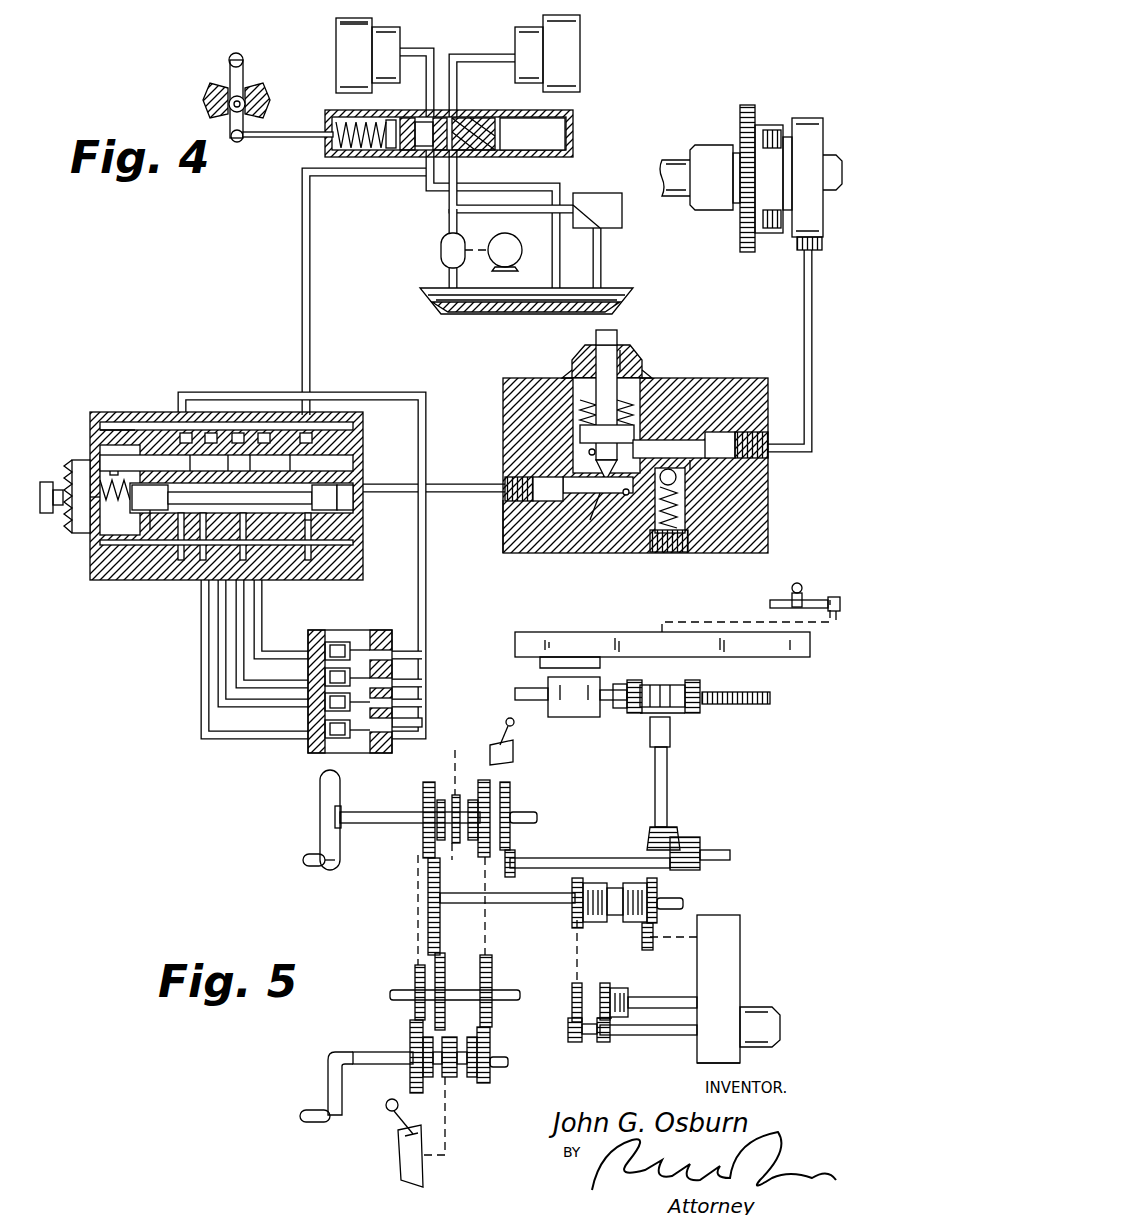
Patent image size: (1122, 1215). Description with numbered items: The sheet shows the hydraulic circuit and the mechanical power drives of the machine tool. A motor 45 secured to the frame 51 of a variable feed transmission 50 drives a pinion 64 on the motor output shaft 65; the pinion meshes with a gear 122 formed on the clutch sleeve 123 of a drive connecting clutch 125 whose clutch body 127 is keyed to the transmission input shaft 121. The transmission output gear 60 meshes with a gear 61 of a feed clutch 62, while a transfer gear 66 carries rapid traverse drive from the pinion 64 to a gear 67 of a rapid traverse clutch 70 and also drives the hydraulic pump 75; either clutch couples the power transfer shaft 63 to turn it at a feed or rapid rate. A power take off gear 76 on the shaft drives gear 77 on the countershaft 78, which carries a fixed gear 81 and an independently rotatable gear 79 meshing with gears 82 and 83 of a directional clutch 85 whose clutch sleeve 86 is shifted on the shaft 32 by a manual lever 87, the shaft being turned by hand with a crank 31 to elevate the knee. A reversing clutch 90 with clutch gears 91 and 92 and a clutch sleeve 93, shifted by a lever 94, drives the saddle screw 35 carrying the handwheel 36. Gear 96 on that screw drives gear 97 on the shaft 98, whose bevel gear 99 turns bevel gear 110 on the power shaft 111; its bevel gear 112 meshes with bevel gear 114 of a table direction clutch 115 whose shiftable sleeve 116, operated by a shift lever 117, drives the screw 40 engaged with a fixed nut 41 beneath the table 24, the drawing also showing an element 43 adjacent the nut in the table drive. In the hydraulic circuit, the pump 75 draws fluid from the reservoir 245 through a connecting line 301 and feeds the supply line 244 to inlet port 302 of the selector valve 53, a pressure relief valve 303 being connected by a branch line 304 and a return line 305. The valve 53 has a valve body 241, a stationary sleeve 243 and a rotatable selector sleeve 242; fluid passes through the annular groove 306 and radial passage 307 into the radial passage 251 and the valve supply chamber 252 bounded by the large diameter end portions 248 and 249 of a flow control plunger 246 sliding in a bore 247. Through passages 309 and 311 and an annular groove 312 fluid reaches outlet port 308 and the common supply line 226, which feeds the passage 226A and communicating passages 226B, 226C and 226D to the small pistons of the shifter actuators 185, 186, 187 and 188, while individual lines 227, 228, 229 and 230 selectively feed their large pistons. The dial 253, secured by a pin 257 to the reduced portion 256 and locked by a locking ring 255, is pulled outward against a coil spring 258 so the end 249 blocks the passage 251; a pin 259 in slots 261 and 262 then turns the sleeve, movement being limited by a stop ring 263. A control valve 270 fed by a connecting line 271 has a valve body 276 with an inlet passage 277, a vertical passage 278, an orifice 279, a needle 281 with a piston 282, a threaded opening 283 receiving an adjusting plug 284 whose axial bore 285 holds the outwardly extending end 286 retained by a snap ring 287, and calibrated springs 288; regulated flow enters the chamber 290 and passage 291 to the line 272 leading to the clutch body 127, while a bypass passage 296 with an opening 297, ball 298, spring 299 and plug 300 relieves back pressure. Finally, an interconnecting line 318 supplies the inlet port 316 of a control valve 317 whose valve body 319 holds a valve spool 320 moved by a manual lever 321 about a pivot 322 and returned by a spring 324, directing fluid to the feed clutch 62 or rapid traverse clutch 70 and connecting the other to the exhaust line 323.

In FIG. 5, the table 24 is at (596, 632).
In FIG. 5, the crank 31 is at (330, 1084).
In FIG. 5, the shaft 32 is at (380, 1052).
In FIG. 5, the screw 35 is at (538, 816).
In FIG. 5, the handwheel 36 is at (318, 795).
In FIG. 5, the screw 40 is at (770, 698).
In FIG. 5, the fixed nut 41 is at (553, 710).
In FIG. 5, the hub 43 is at (620, 712).
In FIG. 4, the motor 45 is at (512, 246).
In FIG. 5, the motor 45 is at (758, 1012).
In FIG. 5, the variable feed transmission 50 is at (754, 969).
In FIG. 5, the frame 51 is at (735, 916).
In FIG. 4, the selector control valve 53 is at (132, 366).
In FIG. 5, the output gear 60 is at (660, 997).
In FIG. 5, the gear 61 is at (660, 886).
In FIG. 4, the feed clutch 62 is at (592, 50).
In FIG. 5, the feed clutch 62 is at (640, 920).
In FIG. 5, the power transfer shaft 63 is at (524, 903).
In FIG. 5, the motor pinion 64 is at (600, 1046).
In FIG. 5, the motor output shaft 65 is at (632, 1034).
In FIG. 5, the transfer gear 66 is at (572, 991).
In FIG. 5, the rapid traverse gear 67 is at (572, 918).
In FIG. 4, the rapid traverse clutch 70 is at (320, 34).
In FIG. 5, the rapid traverse clutch 70 is at (598, 934).
In FIG. 4, the hydraulic pump 75 is at (440, 247).
In FIG. 5, the power take off gear 76 is at (428, 886).
In FIG. 5, the gear 77 is at (445, 960).
In FIG. 5, the countershaft 78 is at (392, 996).
In FIG. 5, the gear 79 is at (415, 969).
In FIG. 5, the gear 81 is at (490, 976).
In FIG. 5, the gear 82 is at (410, 1077).
In FIG. 5, the gear 83 is at (490, 1052).
In FIG. 5, the directional clutch 85 is at (483, 1088).
In FIG. 5, the clutch sleeve 86 is at (453, 1082).
In FIG. 5, the manual lever 87 is at (388, 1112).
In FIG. 5, the directional reversing control clutch 90 is at (413, 841).
In FIG. 5, the clutch gear 91 is at (423, 790).
In FIG. 5, the clutch gear 92 is at (490, 786).
In FIG. 5, the clutch sleeve 93 is at (455, 844).
In FIG. 5, the lever 94 is at (492, 736).
In FIG. 5, the gear 96 is at (512, 797).
In FIG. 5, the gear 97 is at (516, 855).
In FIG. 5, the shaft 98 is at (566, 858).
In FIG. 5, the bevel gear 99 is at (690, 842).
In FIG. 5, the bevel gear 110 is at (664, 830).
In FIG. 5, the power shaft 111 is at (668, 776).
In FIG. 5, the bevel gear 112 is at (668, 735).
In FIG. 5, the bevel gear 114 is at (690, 708).
In FIG. 5, the table direction clutch 115 is at (695, 681).
In FIG. 5, the shiftable sleeve 116 is at (662, 678).
In FIG. 5, the shift lever 117 is at (797, 582).
In FIG. 5, the input shaft 121 is at (655, 998).
In FIG. 4, the gear 122 is at (741, 231).
In FIG. 5, the gear 122 is at (603, 983).
In FIG. 4, the clutch sleeve 123 is at (770, 242).
In FIG. 4, the drive connecting clutch 125 is at (764, 100).
In FIG. 5, the drive connecting clutch 125 is at (630, 989).
In FIG. 4, the clutch body 127 is at (806, 118).
In FIG. 4, the shifter actuator 185 is at (294, 721).
In FIG. 4, the shifter actuator 186 is at (294, 700).
In FIG. 4, the shifter actuator 187 is at (294, 672).
In FIG. 4, the shifter actuator 188 is at (365, 626).
In FIG. 4, the common supply line 226 is at (352, 392).
In FIG. 4, the passage 226A is at (386, 650).
In FIG. 4, the communicating passage 226B is at (400, 676).
In FIG. 4, the communicating passage 226C is at (400, 704).
In FIG. 4, the communicating passage 226D is at (400, 726).
In FIG. 4, the line 227 is at (204, 738).
In FIG. 4, the line 228 is at (216, 702).
In FIG. 4, the line 229 is at (244, 620).
In FIG. 4, the line 230 is at (265, 594).
In FIG. 4, the valve body 241 is at (110, 402).
In FIG. 4, the selector sleeve 242 is at (130, 455).
In FIG. 4, the stationary sleeve 243 is at (112, 428).
In FIG. 4, the supply line 244 is at (302, 200).
In FIG. 4, the reservoir 245 is at (492, 305).
In FIG. 4, the flow control plunger 246 is at (335, 478).
In FIG. 4, the bore 247 is at (345, 505).
In FIG. 4, the large diameter end portion 248 is at (200, 450).
In FIG. 4, the large diameter end portion 249 is at (322, 496).
In FIG. 4, the radial passage 251 is at (330, 535).
In FIG. 4, the valve supply chamber 252 is at (255, 460).
In FIG. 4, the dial 253 is at (66, 520).
In FIG. 4, the locking ring 255 is at (68, 535).
In FIG. 4, the reduced portion 256 is at (90, 520).
In FIG. 4, the pin 257 is at (98, 490).
In FIG. 4, the coil spring 258 is at (130, 540).
In FIG. 4, the pin 259 is at (182, 560).
In FIG. 4, the radial slot 261 is at (108, 483).
In FIG. 4, the radial slot 262 is at (140, 548).
In FIG. 4, the stop ring 263 is at (150, 560).
In FIG. 4, the pressure fluid control valve 270 is at (707, 340).
In FIG. 4, the connecting line 271 is at (460, 487).
In FIG. 4, the line 272 is at (806, 292).
In FIG. 4, the valve body 276 is at (504, 527).
In FIG. 4, the fluid inlet passage 277 is at (626, 498).
In FIG. 4, the vertical passage 278 is at (582, 446).
In FIG. 4, the orifice 279 is at (576, 496).
In FIG. 4, the needle 281 is at (691, 446).
In FIG. 4, the piston 282 is at (617, 440).
In FIG. 4, the opening 283 is at (572, 376).
In FIG. 4, the adjusting plug 284 is at (581, 360).
In FIG. 4, the axial bore 285 is at (630, 370).
In FIG. 4, the outwardly extending end 286 is at (612, 342).
In FIG. 4, the snap ring 287 is at (600, 346).
In FIG. 4, the calibrated springs 288 is at (577, 410).
In FIG. 4, the chamber 290 is at (602, 500).
In FIG. 4, the passage 291 is at (712, 448).
In FIG. 4, the bypass passage 296 is at (665, 490).
In FIG. 4, the opening 297 is at (720, 464).
In FIG. 4, the ball 298 is at (706, 480).
In FIG. 4, the spring 299 is at (706, 496).
In FIG. 4, the plug 300 is at (676, 553).
In FIG. 4, the connecting line 301 is at (448, 275).
In FIG. 4, the inlet port 302 is at (312, 415).
In FIG. 4, the pressure relief valve 303 is at (600, 192).
In FIG. 4, the branch line 304 is at (460, 214).
In FIG. 4, the return line 305 is at (602, 258).
In FIG. 4, the annular groove 306 is at (355, 433).
In FIG. 4, the radial passage 307 is at (330, 558).
In FIG. 4, the outlet port 308 is at (183, 412).
In FIG. 4, the passage 309 is at (215, 575).
In FIG. 4, the passage 311 is at (175, 570).
In FIG. 4, the annular groove 312 is at (170, 410).
In FIG. 4, the inlet port 316 is at (468, 151).
In FIG. 4, the control valve 317 is at (585, 136).
In FIG. 4, the interconnecting line 318 is at (458, 176).
In FIG. 4, the valve body 319 is at (575, 118).
In FIG. 4, the valve spool 320 is at (405, 118).
In FIG. 4, the manual lever 321 is at (231, 60).
In FIG. 4, the pivot 322 is at (250, 92).
In FIG. 4, the exhaust line 323 is at (425, 188).
In FIG. 4, the spring 324 is at (350, 117).